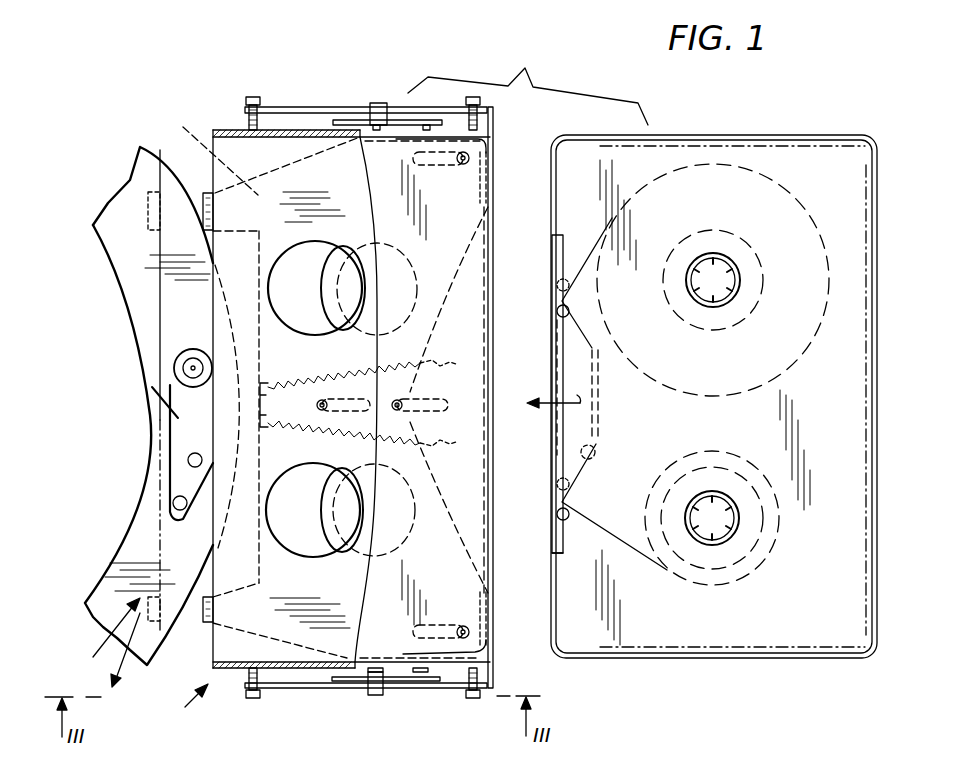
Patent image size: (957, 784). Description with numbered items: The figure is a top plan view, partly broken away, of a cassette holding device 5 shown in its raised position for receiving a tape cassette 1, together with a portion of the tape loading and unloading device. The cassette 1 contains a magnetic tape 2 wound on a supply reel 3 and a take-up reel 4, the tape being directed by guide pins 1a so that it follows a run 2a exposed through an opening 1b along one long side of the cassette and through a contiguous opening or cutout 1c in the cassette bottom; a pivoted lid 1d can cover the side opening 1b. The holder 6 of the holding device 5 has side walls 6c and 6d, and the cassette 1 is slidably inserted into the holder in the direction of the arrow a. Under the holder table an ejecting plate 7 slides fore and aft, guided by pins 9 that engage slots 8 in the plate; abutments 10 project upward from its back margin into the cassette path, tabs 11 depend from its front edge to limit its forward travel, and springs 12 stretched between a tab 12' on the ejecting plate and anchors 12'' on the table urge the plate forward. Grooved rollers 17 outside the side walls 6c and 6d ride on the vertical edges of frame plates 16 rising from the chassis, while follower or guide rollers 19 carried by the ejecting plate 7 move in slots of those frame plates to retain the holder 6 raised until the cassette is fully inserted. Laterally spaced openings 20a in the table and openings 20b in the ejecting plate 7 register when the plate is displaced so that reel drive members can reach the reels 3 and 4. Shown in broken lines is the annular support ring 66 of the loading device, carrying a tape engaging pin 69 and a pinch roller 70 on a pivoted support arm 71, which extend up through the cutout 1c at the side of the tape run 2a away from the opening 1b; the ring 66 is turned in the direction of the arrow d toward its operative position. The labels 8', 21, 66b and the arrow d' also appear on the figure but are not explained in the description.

The cassette 1 is at (834, 150).
The guide pins 1a is at (569, 308).
The opening 1b is at (553, 533).
The opening or cutout 1c is at (591, 458).
The pivoted lid 1d is at (552, 268).
The magnetic tape 2 is at (635, 547).
The run 2a is at (552, 442).
The supply reel 3 is at (733, 261).
The take-up reel 4 is at (692, 507).
The cassette holding device 5 is at (186, 709).
The holder 6 is at (305, 653).
The side wall 6c is at (296, 138).
The side wall 6d is at (266, 662).
The ejecting plate 7 is at (214, 353).
The slots 8 is at (441, 404).
The slide plate with slots 8' is at (385, 433).
The pins 9 is at (462, 165).
The abutments 10 is at (203, 196).
The tabs 11 is at (488, 175).
The springs 12 is at (361, 427).
The tab 12' is at (242, 405).
The anchors 12'' is at (452, 386).
The frame plates 16 is at (285, 108).
The grooved rollers 17 is at (247, 100).
The follower or guide rollers 19 is at (357, 117).
The openings 20a is at (313, 222).
The openings 20b is at (334, 310).
The bearing block 21 is at (380, 113).
The support ring 66 is at (116, 559).
The door bracket 66b is at (168, 401).
The tape engaging pin 69 is at (178, 496).
The pinch roller 70 is at (177, 370).
The support arm 71 is at (190, 453).
The arrow a is at (554, 391).
The arrow d is at (136, 659).
The door opening direction d' is at (103, 627).